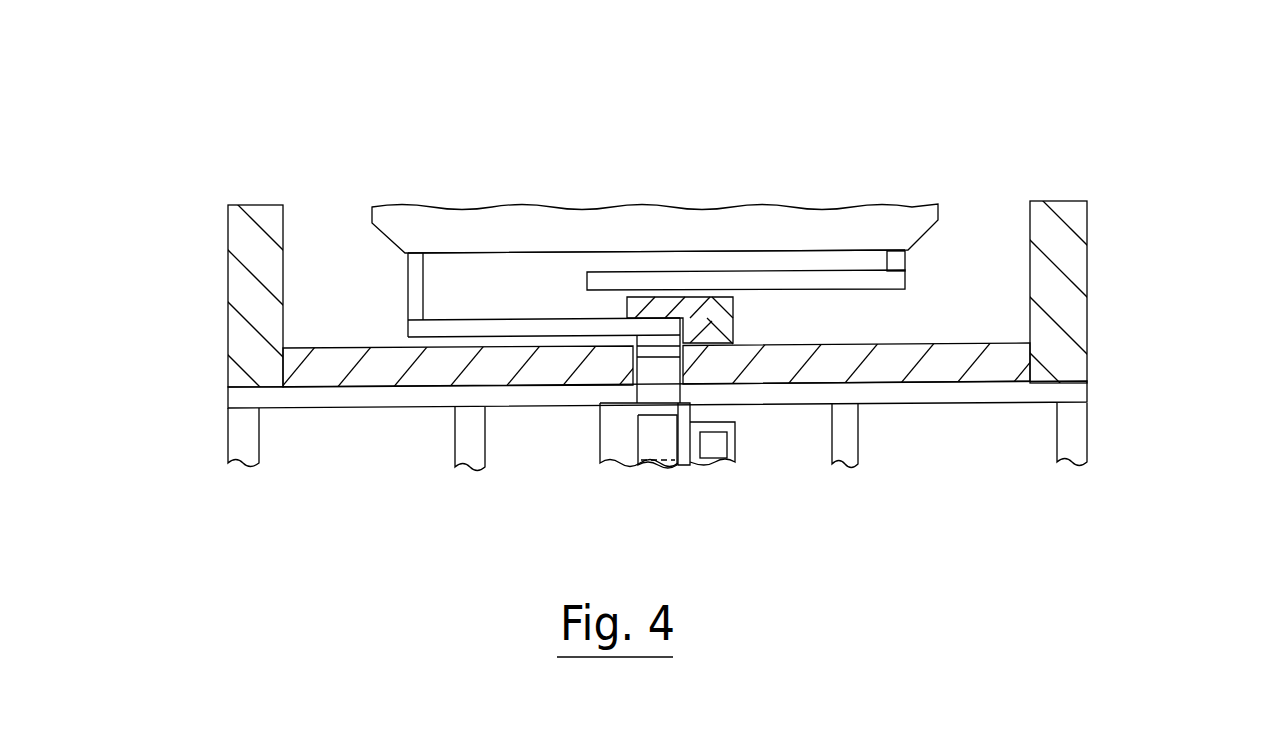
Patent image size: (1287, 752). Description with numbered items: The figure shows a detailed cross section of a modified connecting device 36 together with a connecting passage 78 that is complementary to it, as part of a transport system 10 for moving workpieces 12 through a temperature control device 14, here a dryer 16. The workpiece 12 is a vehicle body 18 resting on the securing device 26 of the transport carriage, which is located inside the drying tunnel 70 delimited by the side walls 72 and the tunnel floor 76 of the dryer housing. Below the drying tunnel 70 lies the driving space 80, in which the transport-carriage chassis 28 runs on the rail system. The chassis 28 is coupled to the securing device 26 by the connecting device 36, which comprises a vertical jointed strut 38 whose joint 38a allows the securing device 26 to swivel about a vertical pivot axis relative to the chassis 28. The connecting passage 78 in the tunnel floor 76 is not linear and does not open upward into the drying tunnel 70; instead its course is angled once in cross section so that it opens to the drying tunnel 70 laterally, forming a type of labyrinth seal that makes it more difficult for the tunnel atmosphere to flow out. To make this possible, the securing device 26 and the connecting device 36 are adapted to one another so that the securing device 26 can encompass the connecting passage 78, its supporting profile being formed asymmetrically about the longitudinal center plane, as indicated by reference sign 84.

The transport system 10 is at (722, 475).
The workpieces 12 is at (853, 211).
The temperature control device 14 is at (1091, 136).
The dryer 16 is at (1126, 176).
The vehicle bodies 18 is at (913, 215).
The securing device 26 is at (913, 268).
The transport-carriage chassis 28 is at (593, 469).
The connecting device 36 is at (692, 335).
The jointed strut 38 is at (658, 395).
The joint 38a is at (648, 354).
The drying tunnel 70 is at (352, 290).
The side walls 72 is at (243, 282).
The tunnel floor 76 is at (331, 365).
The connecting passage 78 is at (680, 318).
The driving space 80 is at (557, 456).
The asymmetric supporting profile formation 84 is at (626, 266).